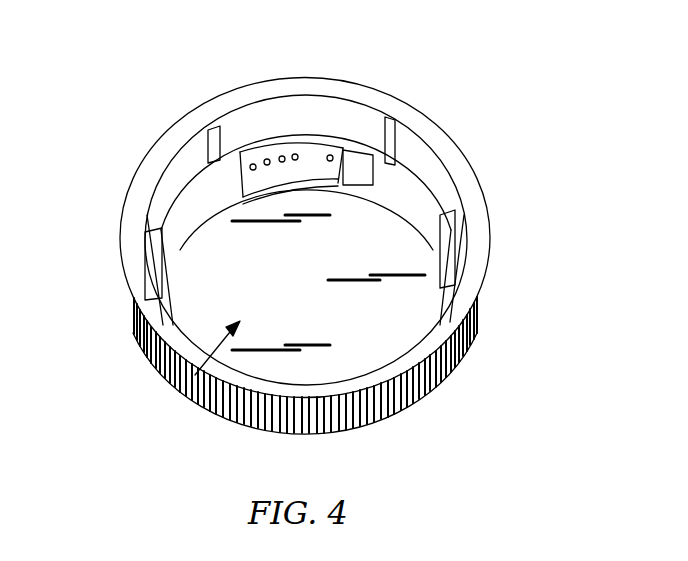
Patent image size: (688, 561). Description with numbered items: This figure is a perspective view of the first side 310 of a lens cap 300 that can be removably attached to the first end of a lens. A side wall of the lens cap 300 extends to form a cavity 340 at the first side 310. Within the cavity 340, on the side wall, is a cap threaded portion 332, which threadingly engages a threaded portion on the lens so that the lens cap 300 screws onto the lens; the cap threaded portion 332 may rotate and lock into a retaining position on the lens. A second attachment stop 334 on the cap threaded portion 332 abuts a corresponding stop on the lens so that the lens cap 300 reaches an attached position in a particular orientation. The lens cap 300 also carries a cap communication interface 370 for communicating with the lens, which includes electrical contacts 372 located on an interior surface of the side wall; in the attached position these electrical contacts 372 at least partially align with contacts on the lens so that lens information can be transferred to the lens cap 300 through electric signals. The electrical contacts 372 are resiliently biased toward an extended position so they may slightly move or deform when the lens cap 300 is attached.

The lens cap 300 is at (436, 362).
The first side 310 is at (140, 269).
The cap threaded portion 332 is at (187, 178).
The second attachment stop 334 is at (390, 120).
The cavity 340 is at (195, 375).
The cap communication interface 370 is at (318, 162).
The electrical contacts 372 is at (333, 158).